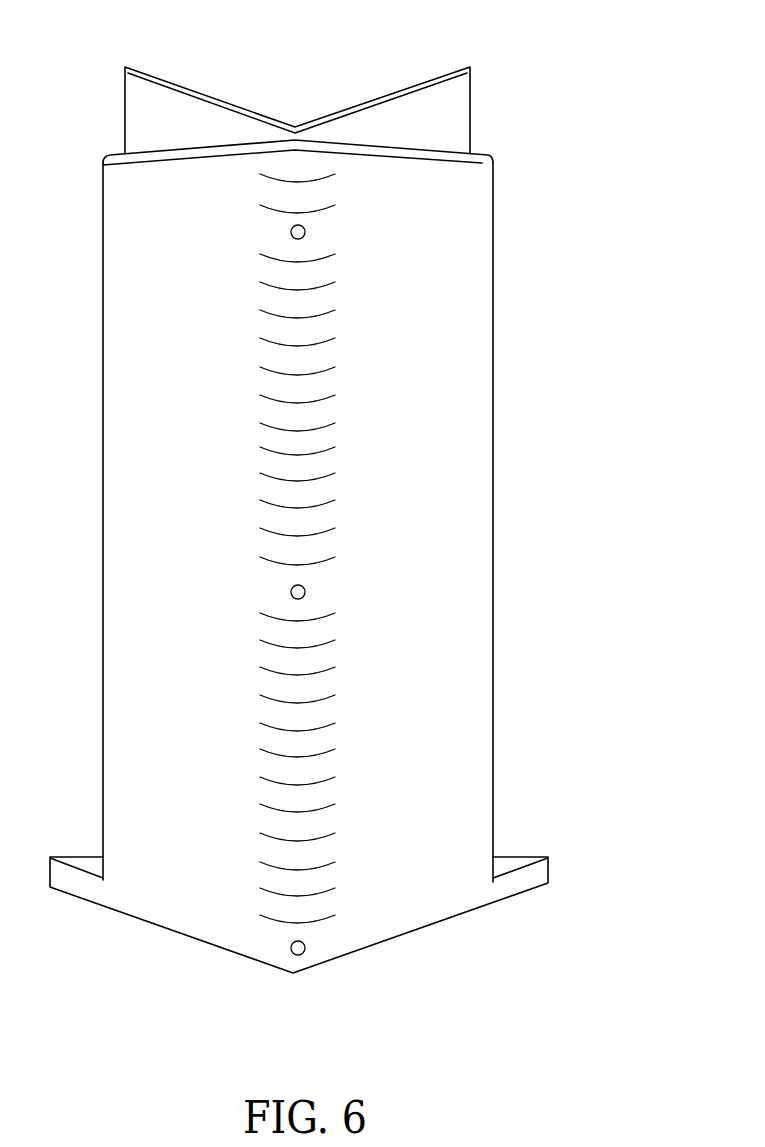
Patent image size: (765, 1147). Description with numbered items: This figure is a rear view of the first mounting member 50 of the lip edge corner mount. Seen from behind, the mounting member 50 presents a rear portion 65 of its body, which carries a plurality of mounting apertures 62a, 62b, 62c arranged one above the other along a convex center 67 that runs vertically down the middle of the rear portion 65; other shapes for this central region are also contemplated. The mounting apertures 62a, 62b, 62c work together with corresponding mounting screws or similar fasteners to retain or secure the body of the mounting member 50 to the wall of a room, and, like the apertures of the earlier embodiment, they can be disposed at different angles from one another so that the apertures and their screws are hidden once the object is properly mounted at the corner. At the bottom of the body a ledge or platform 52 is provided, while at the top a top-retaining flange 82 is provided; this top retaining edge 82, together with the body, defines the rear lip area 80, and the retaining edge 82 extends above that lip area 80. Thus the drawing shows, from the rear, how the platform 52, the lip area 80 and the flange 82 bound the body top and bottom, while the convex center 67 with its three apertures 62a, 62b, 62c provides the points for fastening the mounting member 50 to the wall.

The first mounting member 50 is at (532, 462).
The ledge or platform 52 is at (510, 858).
The aperture 62a is at (305, 231).
The aperture 62b is at (305, 591).
The aperture 62c is at (305, 950).
The rear portion 65 is at (432, 667).
The convex center 67 is at (305, 380).
The lip area 80 is at (450, 147).
The top-retaining flange 82 is at (387, 93).